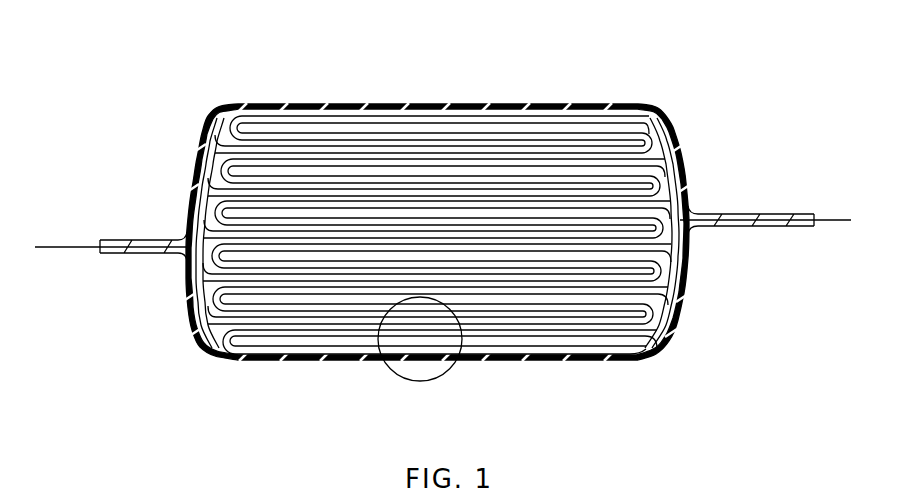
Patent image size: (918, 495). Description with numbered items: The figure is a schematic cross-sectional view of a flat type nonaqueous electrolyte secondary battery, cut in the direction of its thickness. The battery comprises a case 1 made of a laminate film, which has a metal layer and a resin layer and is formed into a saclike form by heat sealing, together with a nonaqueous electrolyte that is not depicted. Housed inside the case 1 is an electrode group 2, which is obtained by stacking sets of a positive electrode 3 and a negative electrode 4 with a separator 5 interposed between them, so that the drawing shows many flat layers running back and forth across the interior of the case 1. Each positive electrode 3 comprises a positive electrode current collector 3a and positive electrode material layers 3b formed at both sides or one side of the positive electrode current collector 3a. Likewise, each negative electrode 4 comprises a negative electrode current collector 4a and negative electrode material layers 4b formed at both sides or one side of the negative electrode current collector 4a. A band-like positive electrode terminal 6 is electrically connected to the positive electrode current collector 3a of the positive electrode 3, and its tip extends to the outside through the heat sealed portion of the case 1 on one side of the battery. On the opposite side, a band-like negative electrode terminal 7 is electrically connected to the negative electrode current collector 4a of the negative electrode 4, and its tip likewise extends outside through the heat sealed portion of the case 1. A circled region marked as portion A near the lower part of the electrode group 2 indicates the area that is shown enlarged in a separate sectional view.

The case 1 is at (455, 97).
The electrode group 2 is at (431, 185).
The positive electrode 3 is at (285, 137).
The positive electrode current collector 3a is at (192, 142).
The positive electrode material layer 3b is at (187, 145).
The negative electrode 4 is at (317, 109).
The negative electrode current collector 4a is at (655, 127).
The negative electrode material layer 4b is at (655, 112).
The separator 5 is at (340, 128).
The positive electrode terminal 6 is at (47, 239).
The negative electrode terminal 7 is at (826, 210).
The portion A is at (440, 362).